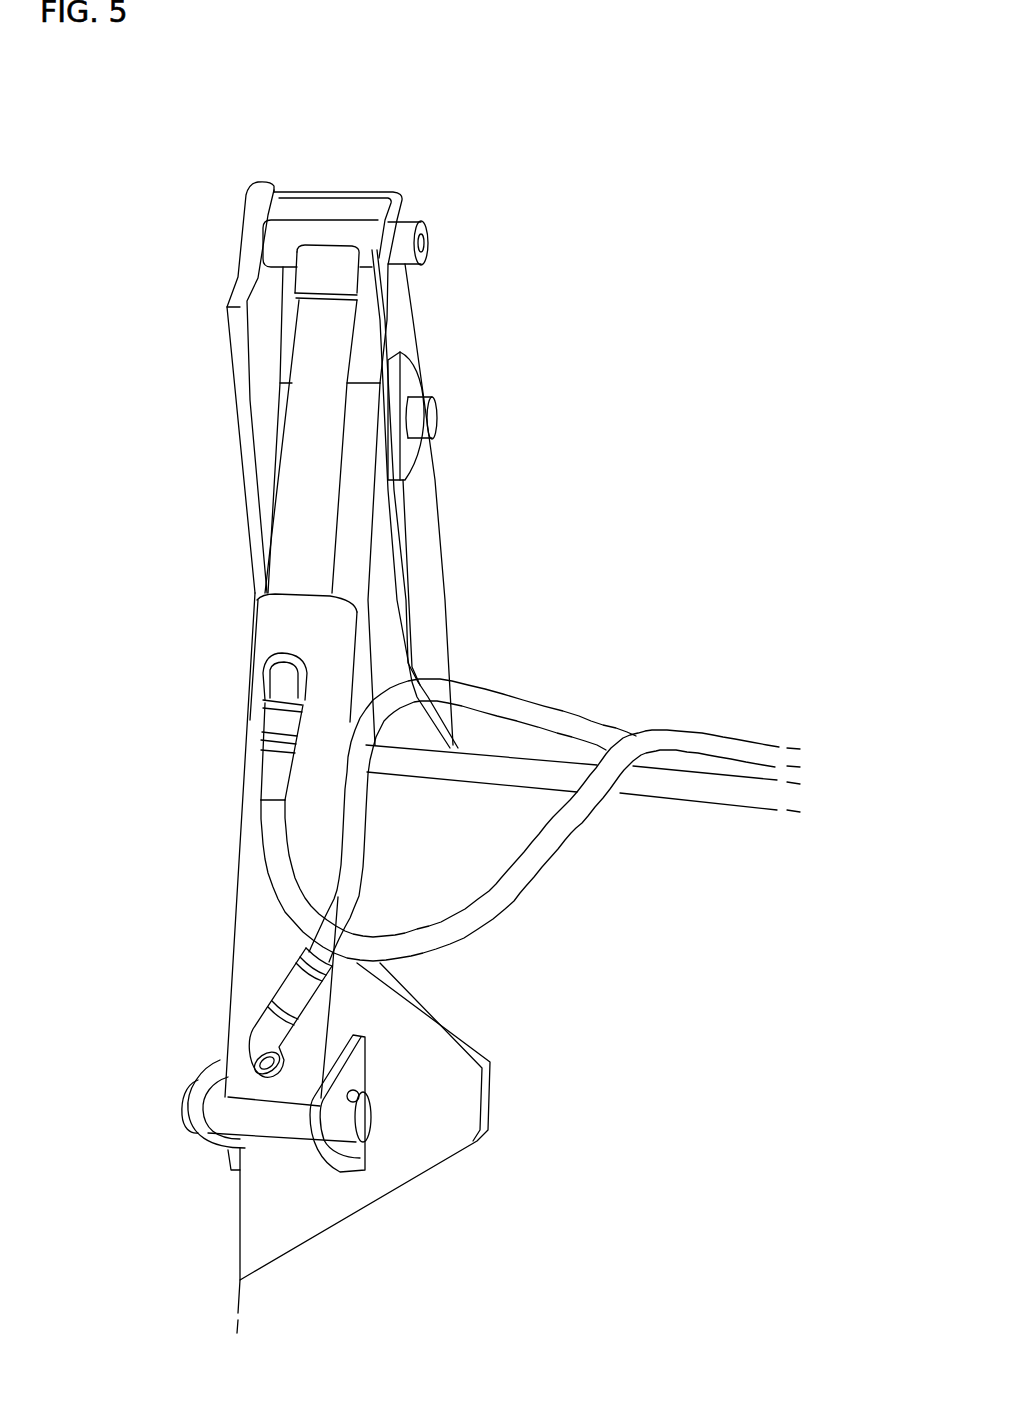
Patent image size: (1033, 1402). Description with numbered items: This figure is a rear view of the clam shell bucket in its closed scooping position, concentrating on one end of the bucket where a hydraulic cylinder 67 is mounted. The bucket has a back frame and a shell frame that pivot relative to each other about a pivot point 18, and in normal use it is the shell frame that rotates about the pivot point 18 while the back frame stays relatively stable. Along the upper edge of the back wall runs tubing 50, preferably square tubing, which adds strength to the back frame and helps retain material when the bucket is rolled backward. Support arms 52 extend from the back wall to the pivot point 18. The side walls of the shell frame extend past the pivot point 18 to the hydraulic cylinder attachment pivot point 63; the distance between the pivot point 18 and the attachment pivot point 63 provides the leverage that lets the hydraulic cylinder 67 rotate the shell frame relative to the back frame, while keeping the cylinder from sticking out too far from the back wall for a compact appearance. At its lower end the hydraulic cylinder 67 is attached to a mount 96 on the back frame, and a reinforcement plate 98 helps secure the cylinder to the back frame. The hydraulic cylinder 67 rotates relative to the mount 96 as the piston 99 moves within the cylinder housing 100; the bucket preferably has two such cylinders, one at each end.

The pivot point 18 is at (429, 420).
The tubing 50 is at (677, 788).
The support arms 52 is at (383, 600).
The hydraulic cylinder attachment pivot point 63 is at (407, 236).
The hydraulic cylinder 67 is at (262, 637).
The mount 96 is at (360, 1148).
The reinforcement plate 98 is at (457, 1128).
The piston 99 is at (300, 490).
The cylinder housing 100 is at (248, 918).